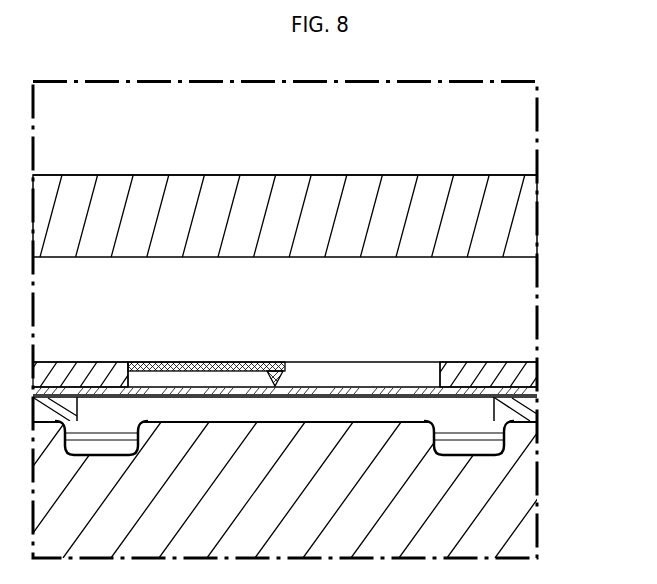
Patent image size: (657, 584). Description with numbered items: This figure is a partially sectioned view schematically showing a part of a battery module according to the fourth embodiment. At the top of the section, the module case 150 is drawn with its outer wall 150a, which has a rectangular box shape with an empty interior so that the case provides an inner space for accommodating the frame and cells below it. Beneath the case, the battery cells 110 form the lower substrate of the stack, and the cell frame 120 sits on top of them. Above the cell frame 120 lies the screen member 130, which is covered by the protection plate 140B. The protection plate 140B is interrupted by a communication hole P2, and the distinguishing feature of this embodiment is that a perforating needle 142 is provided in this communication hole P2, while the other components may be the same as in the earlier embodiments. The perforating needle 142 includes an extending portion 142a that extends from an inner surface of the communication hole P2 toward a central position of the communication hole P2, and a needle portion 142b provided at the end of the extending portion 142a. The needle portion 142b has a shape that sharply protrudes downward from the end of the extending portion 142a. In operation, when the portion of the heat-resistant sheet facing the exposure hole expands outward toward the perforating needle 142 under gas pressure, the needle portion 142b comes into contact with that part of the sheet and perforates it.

The module case 150 is at (137, 146).
The outer wall 150a is at (177, 175).
The perforating needle 142 is at (218, 337).
The extending portion 142a is at (222, 362).
The needle portion 142b is at (282, 375).
The communication hole P2 is at (435, 374).
The protection plate 140B is at (524, 377).
The screen member 130 is at (526, 395).
The cell frame 120 is at (522, 413).
The battery cell 110 is at (522, 468).